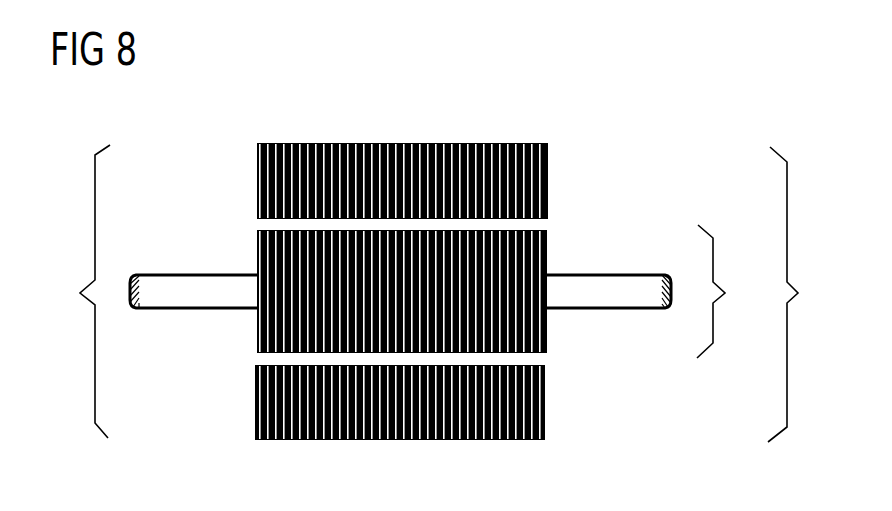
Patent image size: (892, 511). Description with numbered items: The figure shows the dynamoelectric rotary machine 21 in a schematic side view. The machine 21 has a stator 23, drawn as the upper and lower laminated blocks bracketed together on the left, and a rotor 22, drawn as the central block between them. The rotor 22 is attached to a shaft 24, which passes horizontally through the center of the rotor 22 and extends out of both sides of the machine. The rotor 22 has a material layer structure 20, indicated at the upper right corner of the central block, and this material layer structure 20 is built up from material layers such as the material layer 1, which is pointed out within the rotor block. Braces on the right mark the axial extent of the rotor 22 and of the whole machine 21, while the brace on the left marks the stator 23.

The material layer 1 is at (545, 336).
The material layer structure 20 is at (550, 228).
The dynamoelectric rotary machine 21 is at (797, 294).
The rotor 22 is at (727, 291).
The stator 23 is at (78, 291).
The shaft 24 is at (175, 309).